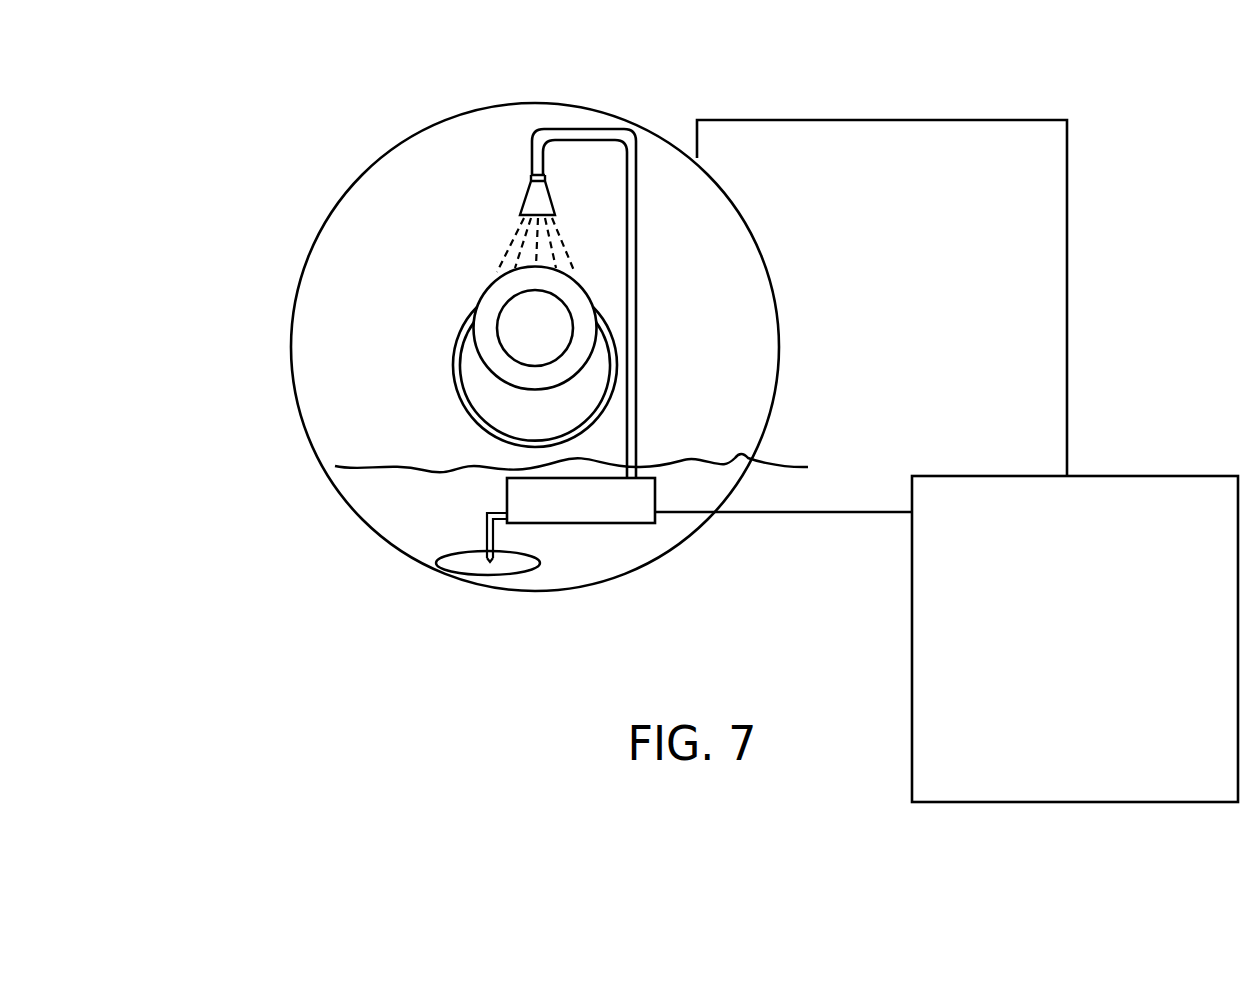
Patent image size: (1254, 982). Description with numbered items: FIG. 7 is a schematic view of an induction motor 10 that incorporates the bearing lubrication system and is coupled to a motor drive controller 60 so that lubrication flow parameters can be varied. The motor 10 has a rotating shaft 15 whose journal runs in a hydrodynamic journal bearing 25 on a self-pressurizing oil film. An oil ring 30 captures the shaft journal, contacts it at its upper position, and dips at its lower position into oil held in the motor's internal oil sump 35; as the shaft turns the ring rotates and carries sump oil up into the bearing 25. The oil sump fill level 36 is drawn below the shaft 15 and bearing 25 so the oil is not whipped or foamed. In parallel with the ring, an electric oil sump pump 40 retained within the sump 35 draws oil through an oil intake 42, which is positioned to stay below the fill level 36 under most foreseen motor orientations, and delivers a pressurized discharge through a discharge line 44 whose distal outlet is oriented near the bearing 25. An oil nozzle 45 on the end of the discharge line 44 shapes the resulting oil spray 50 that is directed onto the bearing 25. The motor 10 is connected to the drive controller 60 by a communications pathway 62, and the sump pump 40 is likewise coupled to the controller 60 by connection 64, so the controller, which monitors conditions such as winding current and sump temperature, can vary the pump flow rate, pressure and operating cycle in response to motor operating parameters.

The induction motor 10 is at (192, 386).
The rotating shaft 15 is at (508, 338).
The hydrodynamic journal bearing 25 is at (593, 322).
The oil ring 30 is at (613, 378).
The internal oil sump 35 is at (665, 533).
The oil sump fill level 36 is at (591, 467).
The oil sump pump 40 is at (627, 508).
The oil intake 42 is at (462, 565).
The discharge line 44 is at (580, 135).
The oil nozzle 45 is at (532, 198).
The oil spray 50 is at (547, 243).
The motor drive controller 60 is at (1014, 770).
The communications pathway 62 is at (902, 127).
The connection line 64 is at (849, 512).